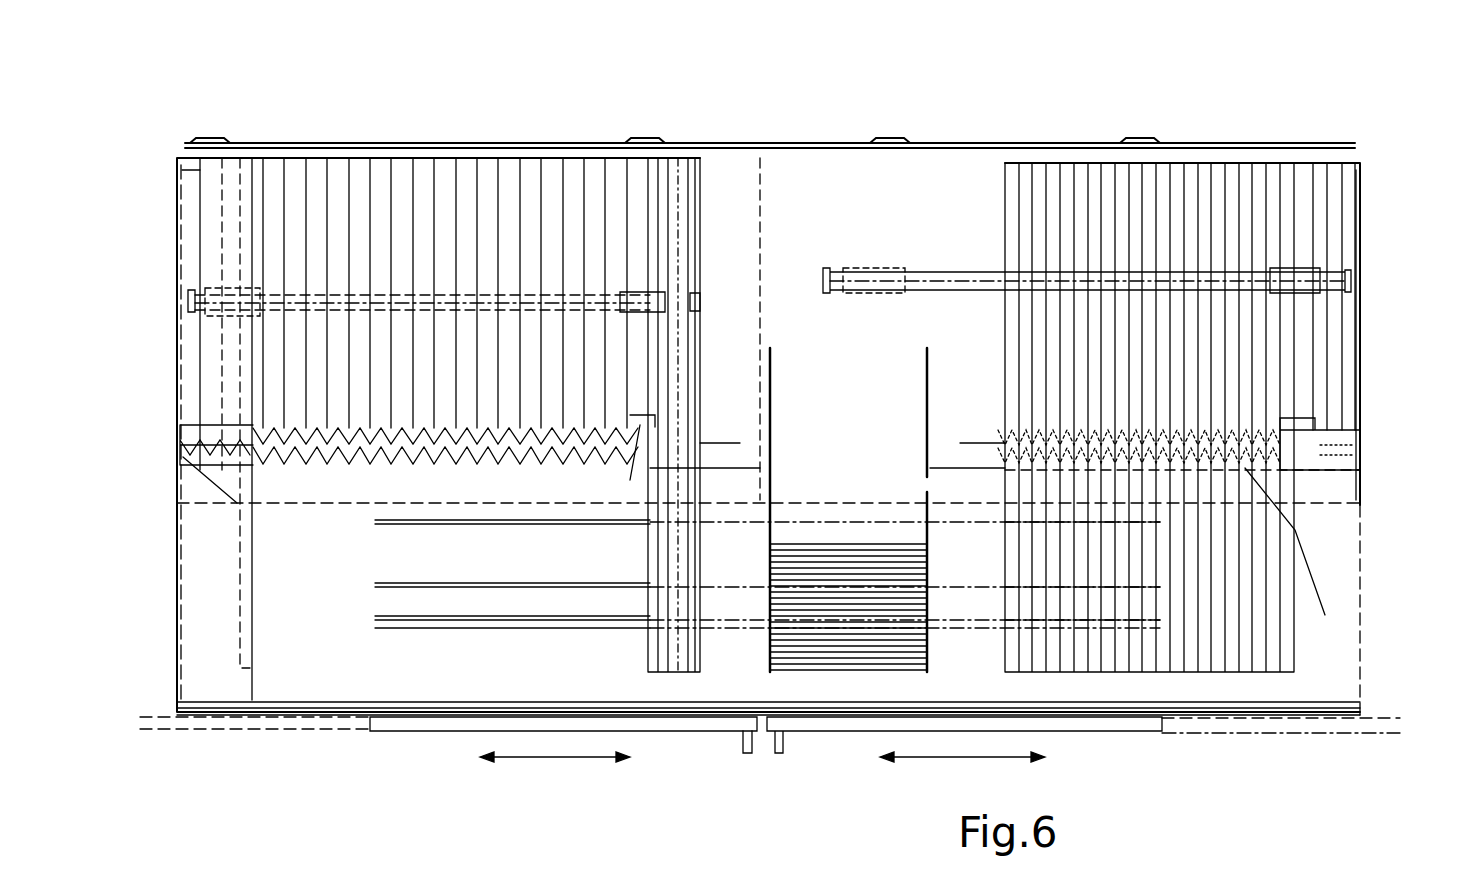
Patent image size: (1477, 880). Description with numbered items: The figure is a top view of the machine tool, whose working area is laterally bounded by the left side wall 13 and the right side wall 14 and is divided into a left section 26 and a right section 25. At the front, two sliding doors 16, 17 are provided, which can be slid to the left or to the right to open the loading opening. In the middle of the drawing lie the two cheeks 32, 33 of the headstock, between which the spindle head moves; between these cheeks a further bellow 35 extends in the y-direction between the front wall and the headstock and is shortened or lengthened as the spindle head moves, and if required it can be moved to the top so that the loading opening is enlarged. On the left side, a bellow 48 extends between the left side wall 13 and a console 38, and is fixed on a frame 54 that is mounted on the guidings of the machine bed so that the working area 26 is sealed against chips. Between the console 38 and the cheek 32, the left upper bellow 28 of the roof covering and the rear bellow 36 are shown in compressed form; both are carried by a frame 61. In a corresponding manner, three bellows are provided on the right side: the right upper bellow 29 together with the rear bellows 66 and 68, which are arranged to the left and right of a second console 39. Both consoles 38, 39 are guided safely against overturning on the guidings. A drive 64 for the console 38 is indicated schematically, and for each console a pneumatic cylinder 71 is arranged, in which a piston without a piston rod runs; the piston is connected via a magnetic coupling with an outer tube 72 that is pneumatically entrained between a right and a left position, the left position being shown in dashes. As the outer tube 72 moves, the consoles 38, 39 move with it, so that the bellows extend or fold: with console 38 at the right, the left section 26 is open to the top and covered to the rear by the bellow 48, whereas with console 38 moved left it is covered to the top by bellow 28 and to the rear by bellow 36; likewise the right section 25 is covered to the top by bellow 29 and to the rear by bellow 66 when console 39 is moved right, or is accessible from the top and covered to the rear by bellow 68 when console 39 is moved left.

The side wall 13 is at (176, 222).
The side wall 14 is at (1360, 320).
The sliding door 16 is at (435, 727).
The sliding door 17 is at (845, 724).
The right section 25 is at (1097, 700).
The left section 26 is at (407, 677).
The left upper bellow 28 is at (668, 663).
The right upper bellow 29 is at (1203, 657).
The cheek 32 is at (735, 637).
The cheek 33 is at (980, 650).
The bellow 35 is at (812, 645).
The rear bellow 36 is at (693, 440).
The console 38 is at (233, 168).
The console 39 is at (1305, 170).
The bellow 48 is at (340, 465).
The frame 54 is at (373, 215).
The frame 61 is at (687, 218).
The drive 64 is at (936, 262).
The rear bellow 66 is at (1179, 534).
The rear bellow 68 is at (1333, 458).
The pneumatic cylinder 71 is at (515, 295).
The outer tube 72 is at (655, 300).